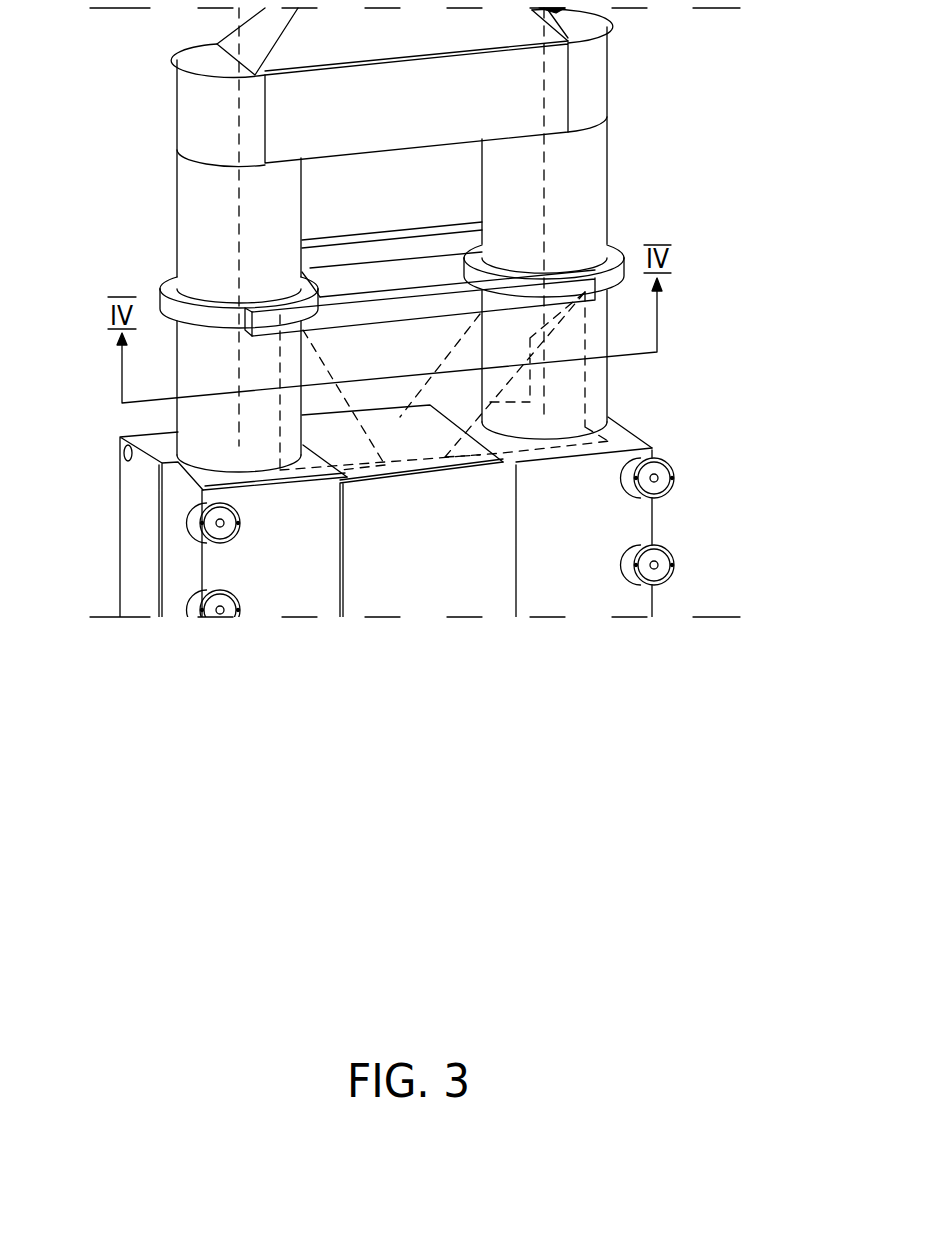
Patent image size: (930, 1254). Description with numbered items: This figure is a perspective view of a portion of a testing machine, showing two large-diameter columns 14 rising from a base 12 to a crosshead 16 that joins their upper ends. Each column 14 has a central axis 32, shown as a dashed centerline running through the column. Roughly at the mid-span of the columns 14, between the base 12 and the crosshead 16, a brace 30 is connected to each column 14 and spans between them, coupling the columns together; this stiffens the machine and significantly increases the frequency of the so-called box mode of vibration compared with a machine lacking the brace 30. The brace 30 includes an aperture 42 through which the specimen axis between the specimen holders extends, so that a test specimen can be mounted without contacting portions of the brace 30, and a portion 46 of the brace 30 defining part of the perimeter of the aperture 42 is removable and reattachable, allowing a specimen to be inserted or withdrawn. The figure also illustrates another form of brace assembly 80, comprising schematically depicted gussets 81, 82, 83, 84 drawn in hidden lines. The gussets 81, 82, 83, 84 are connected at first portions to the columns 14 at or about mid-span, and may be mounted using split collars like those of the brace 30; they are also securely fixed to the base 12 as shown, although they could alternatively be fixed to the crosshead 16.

The base 12 is at (657, 513).
The columns 14 is at (177, 218).
The crosshead 16 is at (178, 86).
The brace 30 is at (613, 280).
The axis 32 is at (238, 147).
The aperture 42 is at (370, 288).
The removable portion 46 is at (401, 242).
The brace assembly 80 is at (300, 498).
The gusset 81 is at (322, 349).
The gusset 82 is at (362, 399).
The gusset 83 is at (432, 354).
The gusset 84 is at (612, 405).